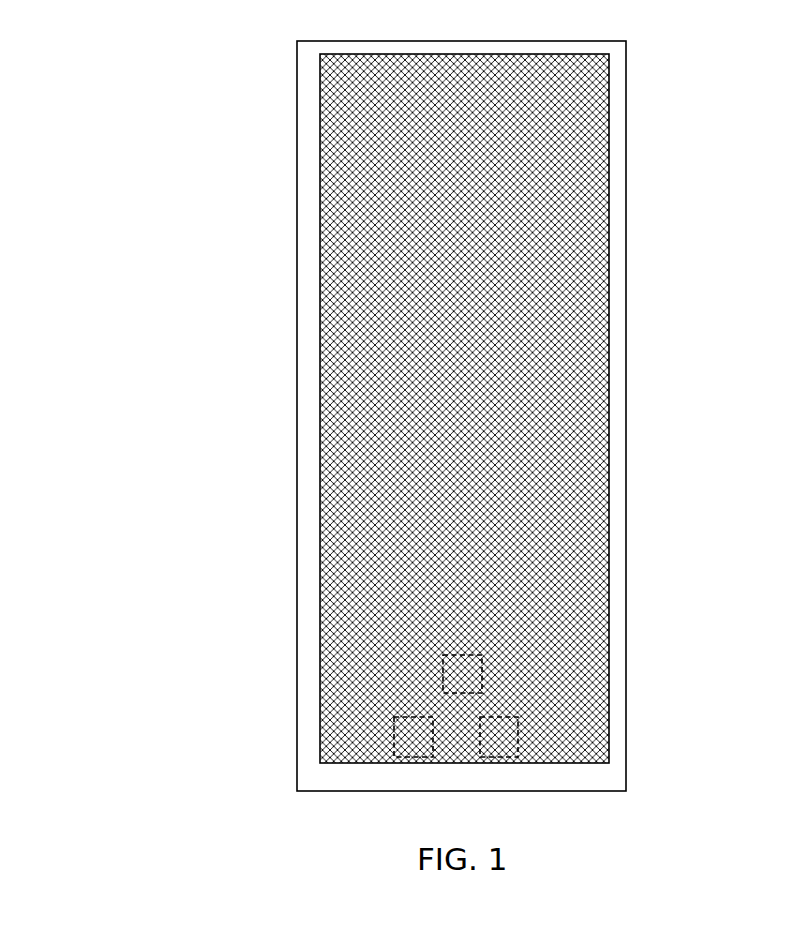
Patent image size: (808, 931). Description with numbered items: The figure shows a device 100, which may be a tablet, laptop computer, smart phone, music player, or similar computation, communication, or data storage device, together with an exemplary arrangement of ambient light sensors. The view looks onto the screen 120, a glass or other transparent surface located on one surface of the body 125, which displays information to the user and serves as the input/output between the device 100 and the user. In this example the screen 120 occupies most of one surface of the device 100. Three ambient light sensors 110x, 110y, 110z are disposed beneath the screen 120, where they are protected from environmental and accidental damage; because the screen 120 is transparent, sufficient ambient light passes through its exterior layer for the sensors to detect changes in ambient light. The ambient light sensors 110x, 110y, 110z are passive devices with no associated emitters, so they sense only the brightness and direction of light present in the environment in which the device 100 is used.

The device 100 is at (220, 71).
The body 125 is at (627, 281).
The screen 120 is at (593, 391).
The ambient light sensor 110x is at (480, 671).
The ambient light sensor 110y is at (395, 737).
The ambient light sensor 110z is at (518, 737).